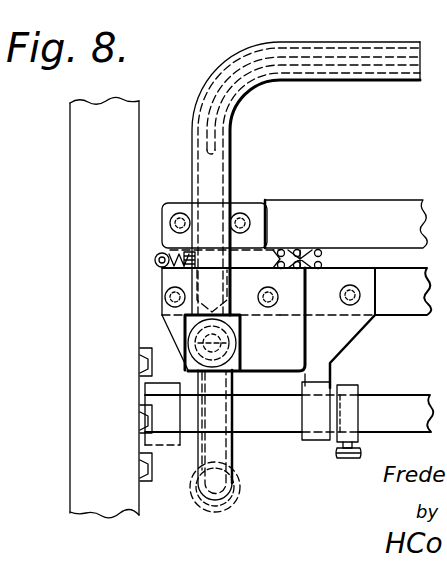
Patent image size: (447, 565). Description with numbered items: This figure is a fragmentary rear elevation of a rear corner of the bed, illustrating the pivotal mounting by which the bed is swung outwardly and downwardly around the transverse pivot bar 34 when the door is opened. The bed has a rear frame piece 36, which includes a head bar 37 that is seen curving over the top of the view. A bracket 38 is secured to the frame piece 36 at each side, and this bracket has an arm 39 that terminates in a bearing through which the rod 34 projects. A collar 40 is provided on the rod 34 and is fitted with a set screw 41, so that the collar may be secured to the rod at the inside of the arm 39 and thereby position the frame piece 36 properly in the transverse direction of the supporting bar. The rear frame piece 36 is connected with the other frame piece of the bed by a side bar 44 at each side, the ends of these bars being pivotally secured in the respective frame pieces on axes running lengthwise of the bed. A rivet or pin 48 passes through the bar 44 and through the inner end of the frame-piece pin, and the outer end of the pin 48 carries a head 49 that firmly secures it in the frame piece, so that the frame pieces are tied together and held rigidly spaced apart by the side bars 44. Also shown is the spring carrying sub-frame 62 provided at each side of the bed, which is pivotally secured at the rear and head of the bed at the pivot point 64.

The transverse pivot bar 34 is at (259, 419).
The rear frame piece 36 is at (394, 316).
The head bar 37 is at (246, 93).
The bracket 38 is at (349, 341).
The arm 39 is at (302, 385).
The collar 40 is at (360, 393).
The set screw 41 is at (352, 457).
The side bar 44 is at (222, 358).
The rivet or pin 48 is at (206, 352).
The head 49 is at (229, 335).
The spring carrying sub-frame 62 is at (300, 213).
The pivot point 64 is at (155, 257).